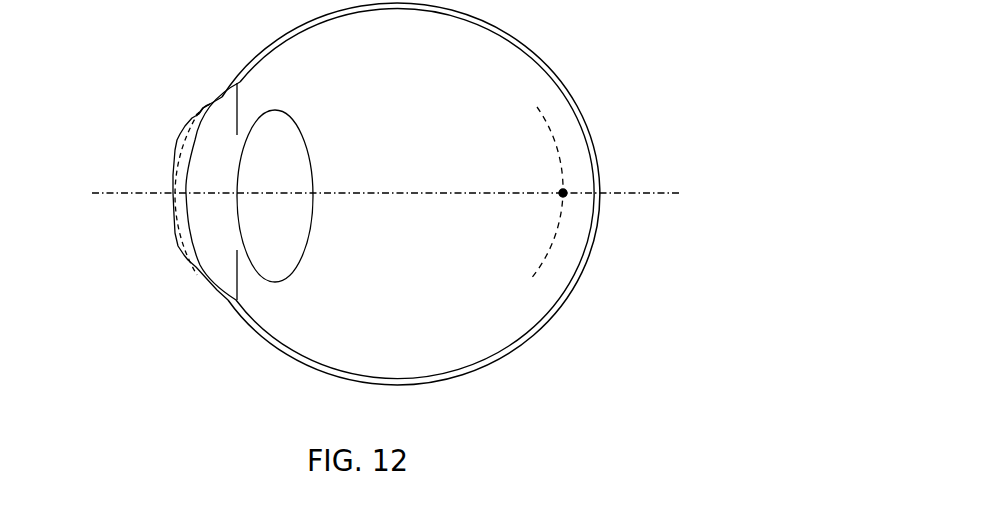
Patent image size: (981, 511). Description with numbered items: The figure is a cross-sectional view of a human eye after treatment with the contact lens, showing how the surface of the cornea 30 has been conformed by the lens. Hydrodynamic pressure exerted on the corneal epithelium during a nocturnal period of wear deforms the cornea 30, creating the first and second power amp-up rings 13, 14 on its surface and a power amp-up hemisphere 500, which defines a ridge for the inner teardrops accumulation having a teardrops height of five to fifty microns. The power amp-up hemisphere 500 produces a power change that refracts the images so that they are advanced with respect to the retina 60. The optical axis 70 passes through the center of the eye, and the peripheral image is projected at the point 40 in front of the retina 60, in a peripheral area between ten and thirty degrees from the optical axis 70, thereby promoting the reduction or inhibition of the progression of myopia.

The first power amp-up ring 13 is at (178, 133).
The second power amp-up ring 14 is at (202, 108).
The cornea 30 is at (222, 300).
The point 40 is at (567, 192).
The retina 60 is at (590, 130).
The optical axis 70 is at (625, 196).
The power amp-up hemisphere 500 is at (173, 198).